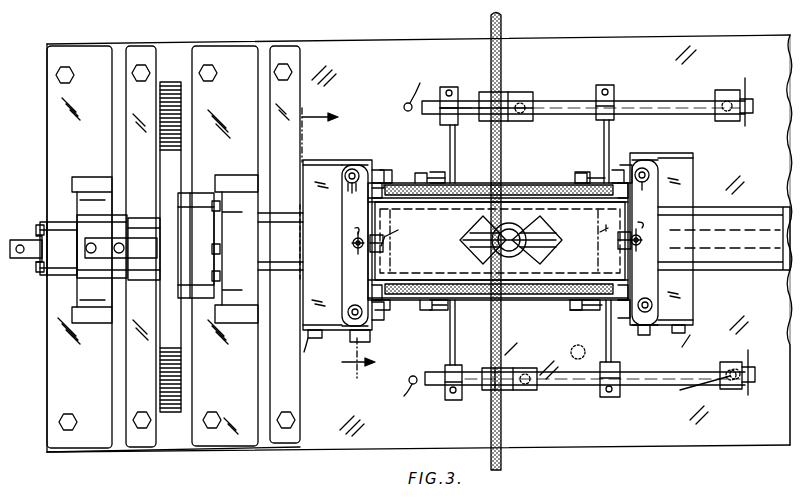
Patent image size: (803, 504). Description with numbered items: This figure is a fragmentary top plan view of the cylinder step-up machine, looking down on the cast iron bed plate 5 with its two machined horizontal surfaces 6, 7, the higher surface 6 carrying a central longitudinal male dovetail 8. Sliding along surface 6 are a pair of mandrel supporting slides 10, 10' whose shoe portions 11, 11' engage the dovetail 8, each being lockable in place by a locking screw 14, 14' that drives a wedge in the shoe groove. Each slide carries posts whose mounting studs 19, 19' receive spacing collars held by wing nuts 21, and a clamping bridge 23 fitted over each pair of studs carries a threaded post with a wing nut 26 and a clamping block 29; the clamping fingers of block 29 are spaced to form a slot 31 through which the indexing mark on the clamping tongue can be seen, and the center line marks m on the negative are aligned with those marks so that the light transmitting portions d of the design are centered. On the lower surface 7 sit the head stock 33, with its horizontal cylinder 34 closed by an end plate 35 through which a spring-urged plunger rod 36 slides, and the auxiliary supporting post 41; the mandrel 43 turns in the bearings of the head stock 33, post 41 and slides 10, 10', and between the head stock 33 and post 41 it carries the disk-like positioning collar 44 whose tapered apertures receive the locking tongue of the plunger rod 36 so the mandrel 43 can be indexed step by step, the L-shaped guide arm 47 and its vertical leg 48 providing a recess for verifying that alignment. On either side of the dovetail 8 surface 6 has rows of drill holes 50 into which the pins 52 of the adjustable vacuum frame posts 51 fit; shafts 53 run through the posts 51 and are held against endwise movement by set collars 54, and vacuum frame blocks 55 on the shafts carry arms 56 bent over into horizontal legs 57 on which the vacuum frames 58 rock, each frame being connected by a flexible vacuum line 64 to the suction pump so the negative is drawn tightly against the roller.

The bed plate 5 is at (322, 470).
The horizontal surface 6 is at (368, 452).
The horizontal surface 7 is at (172, 442).
The male dovetail 8 is at (788, 199).
The mandrel supporting slide 10 is at (360, 227).
The mandrel supporting slide 10' is at (665, 226).
The shoe portion 11 is at (343, 237).
The shoe portion 11' is at (675, 240).
The locking screw 14 is at (315, 352).
The locking screw 14' is at (693, 344).
The mounting stud 19 is at (376, 250).
The mounting stud 19' is at (661, 221).
The wing nut 21 is at (348, 164).
The clamping bridge 23 is at (347, 198).
The wing nut 26 is at (502, 219).
The clamping block 29 is at (352, 243).
The slot 31 is at (383, 252).
The head stock 33 is at (108, 141).
The cylinder 34 is at (60, 226).
The end plate 35 is at (43, 226).
The plunger rod 36 is at (14, 262).
The auxiliary supporting post 41 is at (256, 106).
The mandrel 43 is at (290, 272).
The positioning collar 44 is at (170, 133).
The guide arm 47 is at (134, 246).
The vertical leg 48 is at (147, 275).
The drill hole 50 is at (563, 238).
The vacuum frame post 51 is at (525, 90).
The pin 52 is at (579, 353).
The shaft 53 is at (676, 98).
The set collar 54 is at (518, 341).
The vacuum frame block 55 is at (456, 85).
The arm 56 is at (448, 140).
The horizontal leg 57 is at (428, 170).
The vacuum frame 58 is at (536, 178).
The flexible vacuum line 64 is at (501, 25).
The light transmitting portion d is at (552, 230).
The center line mark m is at (500, 232).